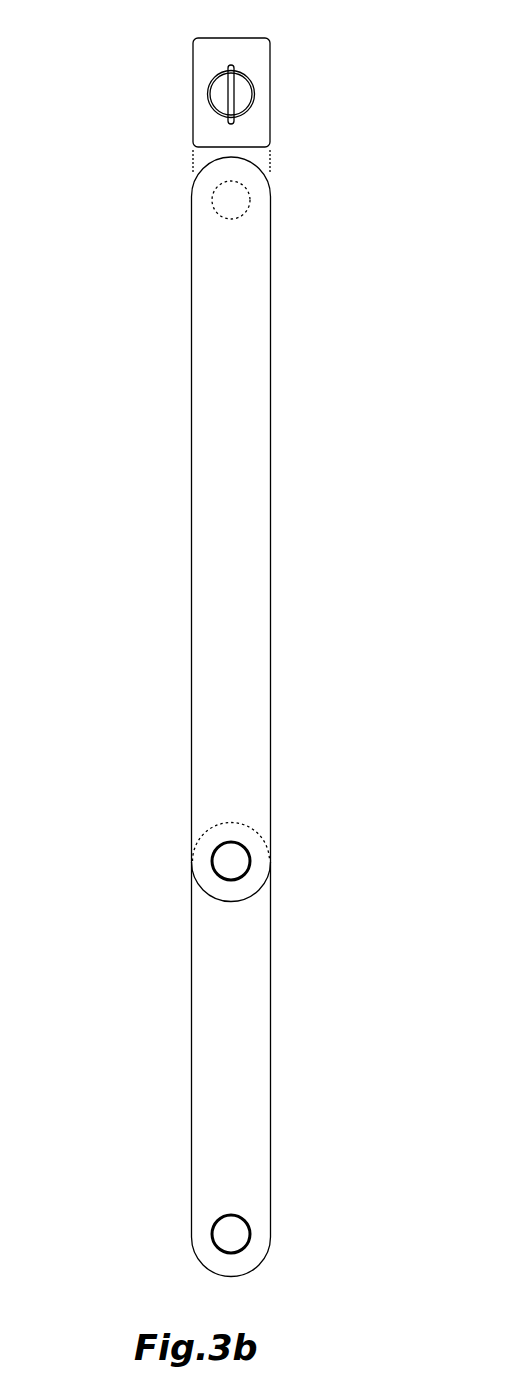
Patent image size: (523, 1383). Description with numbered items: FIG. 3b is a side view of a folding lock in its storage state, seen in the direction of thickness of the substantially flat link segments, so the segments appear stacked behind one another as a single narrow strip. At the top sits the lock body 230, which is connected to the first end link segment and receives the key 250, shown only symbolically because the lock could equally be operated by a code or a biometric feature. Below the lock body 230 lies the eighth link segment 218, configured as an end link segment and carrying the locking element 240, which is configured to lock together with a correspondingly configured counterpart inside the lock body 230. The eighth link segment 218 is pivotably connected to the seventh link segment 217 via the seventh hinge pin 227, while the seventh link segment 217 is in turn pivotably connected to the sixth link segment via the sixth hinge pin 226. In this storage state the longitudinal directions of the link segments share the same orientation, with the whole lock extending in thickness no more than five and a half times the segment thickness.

The seventh link segment 217 is at (243, 1068).
The eighth link segment 218 is at (218, 342).
The sixth hinge pin 226 is at (213, 1243).
The seventh hinge pin 227 is at (210, 857).
The lock body 230 is at (270, 100).
The locking element 240 is at (233, 197).
The key 250 is at (215, 88).